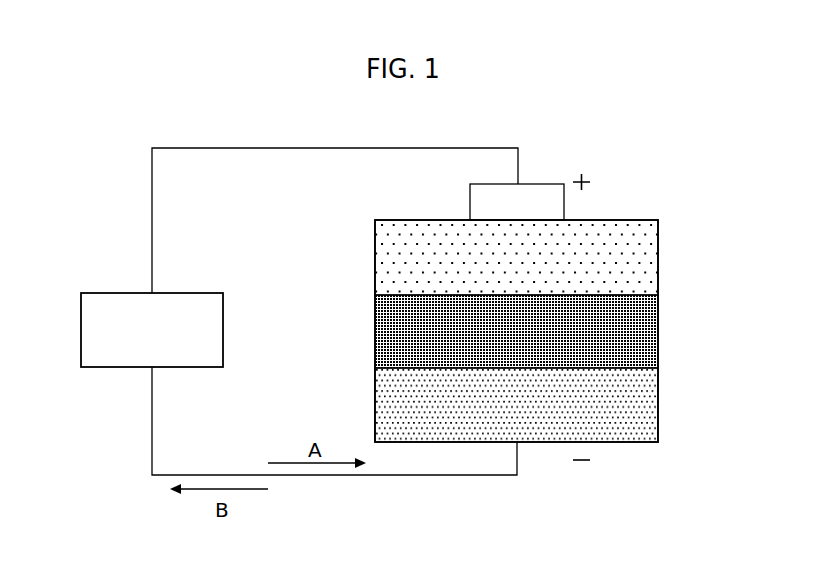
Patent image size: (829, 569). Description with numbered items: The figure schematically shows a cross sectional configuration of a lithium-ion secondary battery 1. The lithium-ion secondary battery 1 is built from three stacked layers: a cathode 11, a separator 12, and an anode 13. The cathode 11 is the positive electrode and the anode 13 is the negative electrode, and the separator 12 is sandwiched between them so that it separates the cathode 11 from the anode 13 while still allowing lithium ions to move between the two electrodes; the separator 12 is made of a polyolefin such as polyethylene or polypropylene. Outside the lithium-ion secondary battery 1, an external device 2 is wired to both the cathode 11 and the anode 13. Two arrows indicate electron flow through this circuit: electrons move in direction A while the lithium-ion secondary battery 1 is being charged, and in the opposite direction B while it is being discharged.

The lithium-ion secondary battery 1 is at (559, 331).
The cathode 11 is at (646, 259).
The separator 12 is at (646, 334).
The anode 13 is at (540, 405).
The external device 2 is at (215, 334).